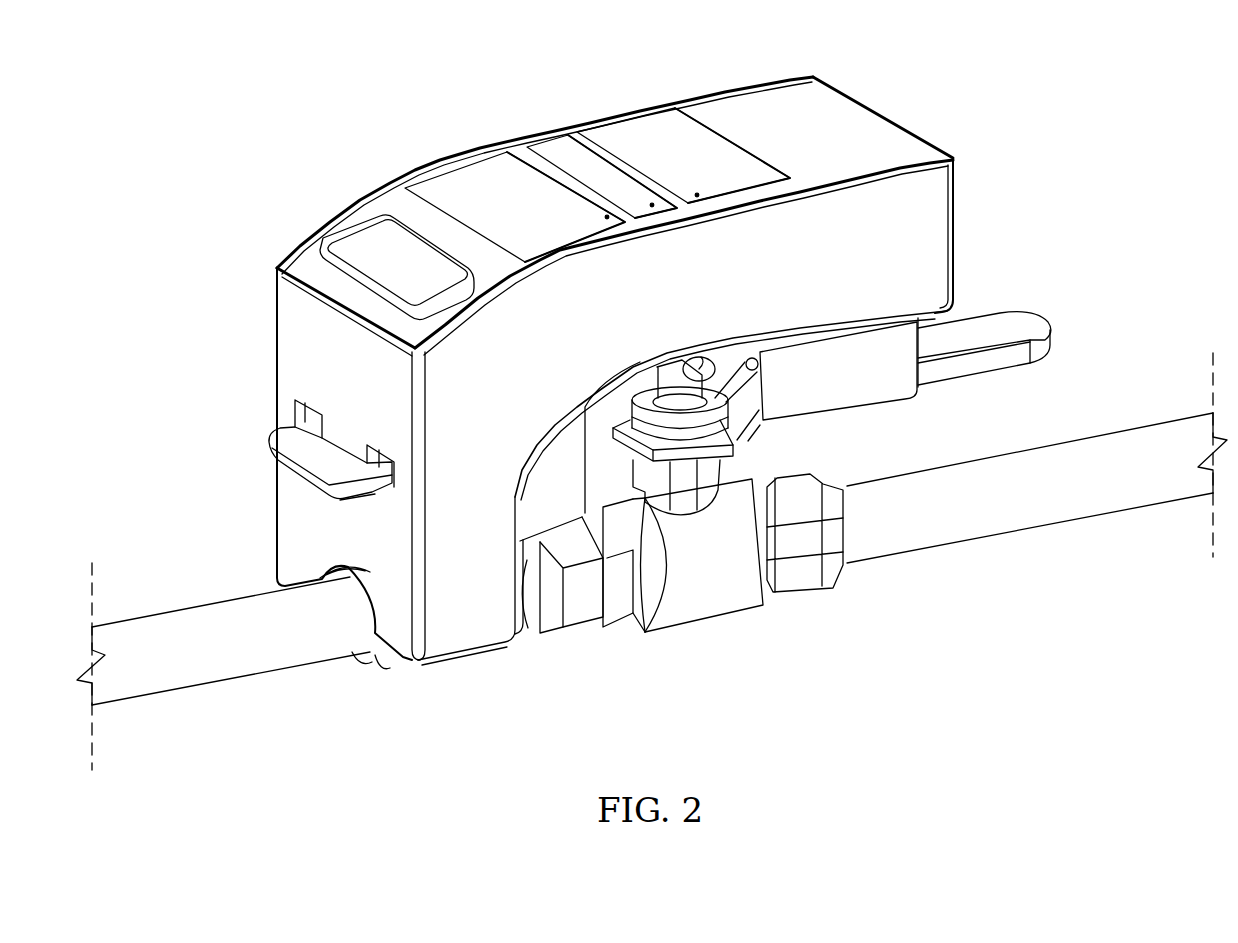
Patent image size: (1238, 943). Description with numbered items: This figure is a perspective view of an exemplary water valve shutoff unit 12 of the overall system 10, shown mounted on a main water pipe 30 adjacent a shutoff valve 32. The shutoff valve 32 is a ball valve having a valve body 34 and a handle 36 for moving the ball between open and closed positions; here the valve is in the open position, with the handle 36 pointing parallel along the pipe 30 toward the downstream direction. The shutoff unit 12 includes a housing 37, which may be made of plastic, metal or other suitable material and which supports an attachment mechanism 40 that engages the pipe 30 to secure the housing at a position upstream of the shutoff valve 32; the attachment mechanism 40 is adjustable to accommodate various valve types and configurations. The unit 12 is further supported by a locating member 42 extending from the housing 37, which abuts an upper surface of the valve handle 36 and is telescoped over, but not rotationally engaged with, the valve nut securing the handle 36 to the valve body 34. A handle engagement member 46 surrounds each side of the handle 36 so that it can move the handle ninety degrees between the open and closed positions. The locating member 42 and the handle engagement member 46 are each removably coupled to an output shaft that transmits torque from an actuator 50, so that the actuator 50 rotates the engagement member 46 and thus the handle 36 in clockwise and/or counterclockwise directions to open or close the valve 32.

The fluid control assembly 10 is at (652, 397).
The water valve shutoff unit 12 is at (587, 344).
The main water pipe 30 is at (1036, 513).
The shutoff valve 32 is at (681, 511).
The valve body 34 is at (703, 602).
The handle 36 is at (1012, 325).
The housing 37 is at (312, 347).
The attachment mechanism 40 is at (380, 660).
The locating member 42 is at (720, 410).
The handle engagement member 46 is at (895, 383).
The actuator 50 is at (545, 480).